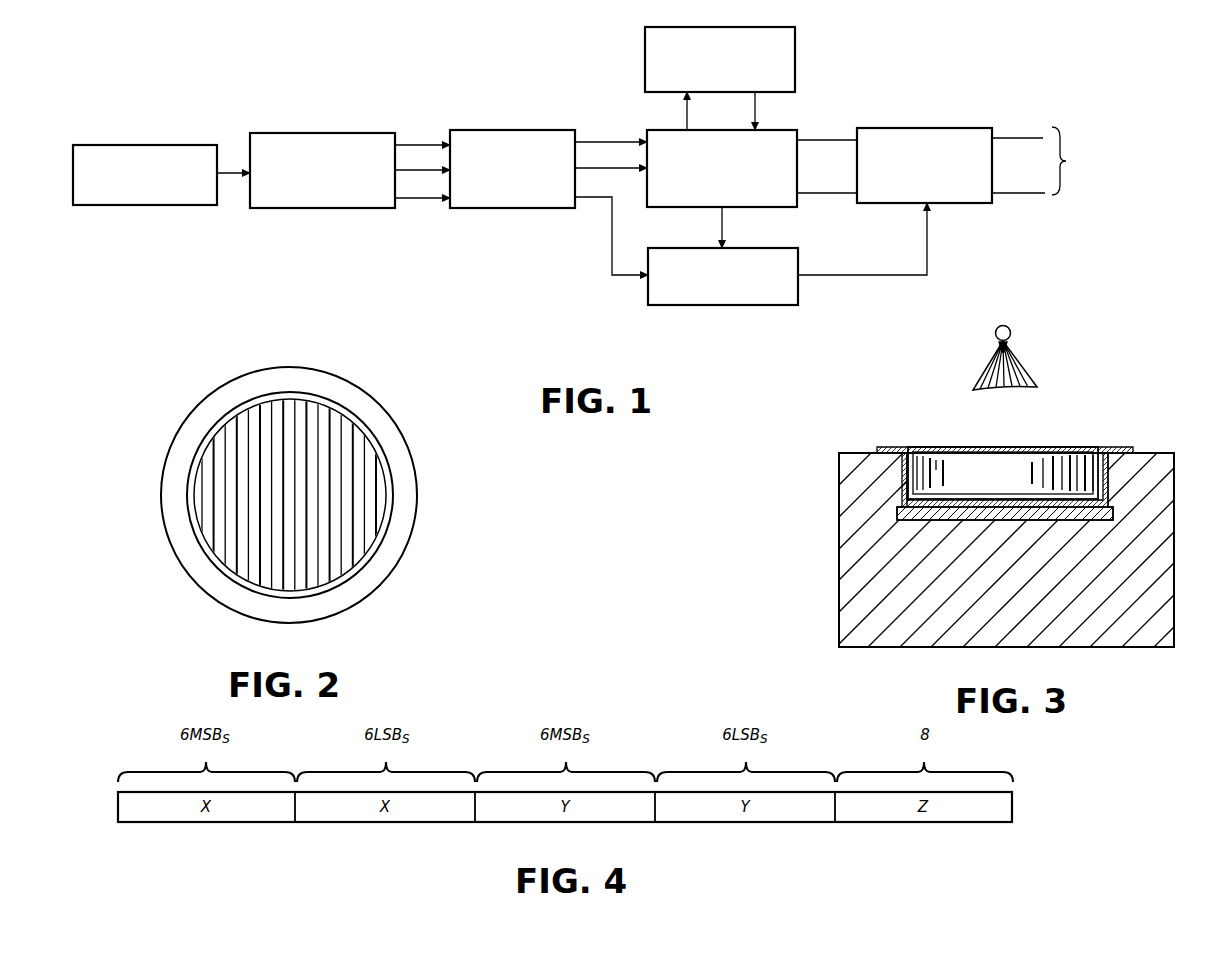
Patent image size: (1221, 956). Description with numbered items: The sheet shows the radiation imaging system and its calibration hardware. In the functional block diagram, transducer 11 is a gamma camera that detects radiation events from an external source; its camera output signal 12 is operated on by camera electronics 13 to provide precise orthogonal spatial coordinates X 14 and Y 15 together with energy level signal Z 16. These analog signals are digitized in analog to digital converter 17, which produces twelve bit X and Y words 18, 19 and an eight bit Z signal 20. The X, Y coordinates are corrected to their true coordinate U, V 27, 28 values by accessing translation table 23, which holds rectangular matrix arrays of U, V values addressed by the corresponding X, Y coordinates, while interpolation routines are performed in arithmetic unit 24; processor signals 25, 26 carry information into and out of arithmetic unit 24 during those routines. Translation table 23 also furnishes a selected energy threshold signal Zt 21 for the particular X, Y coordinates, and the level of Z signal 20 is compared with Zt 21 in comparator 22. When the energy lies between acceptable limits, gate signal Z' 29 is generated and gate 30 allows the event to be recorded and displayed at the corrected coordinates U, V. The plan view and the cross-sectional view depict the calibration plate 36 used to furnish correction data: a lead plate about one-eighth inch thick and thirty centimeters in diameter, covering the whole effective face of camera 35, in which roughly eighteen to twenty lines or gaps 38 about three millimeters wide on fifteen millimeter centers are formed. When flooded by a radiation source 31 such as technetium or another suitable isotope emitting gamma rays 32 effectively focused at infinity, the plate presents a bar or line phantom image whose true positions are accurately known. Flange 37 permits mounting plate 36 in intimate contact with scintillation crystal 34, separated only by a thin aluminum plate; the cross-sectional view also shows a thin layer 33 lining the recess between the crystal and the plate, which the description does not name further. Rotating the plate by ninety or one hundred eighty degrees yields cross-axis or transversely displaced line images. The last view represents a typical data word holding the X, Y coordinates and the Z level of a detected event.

In FIG. 1, the transducer 11 is at (110, 145).
In FIG. 1, the camera output signal 12 is at (245, 176).
In FIG. 1, the camera electronics 13 is at (300, 133).
In FIG. 1, the spatial coordinate X 14 is at (427, 142).
In FIG. 1, the spatial coordinate Y 15 is at (425, 173).
In FIG. 1, the energy level signal Z 16 is at (410, 200).
In FIG. 1, the analog to digital converter 17 is at (518, 130).
In FIG. 1, the X word 18 is at (610, 142).
In FIG. 1, the Y word 19 is at (615, 168).
In FIG. 1, the Z signal 20 is at (597, 200).
In FIG. 1, the energy threshold signal Zt 21 is at (718, 212).
In FIG. 1, the comparator 22 is at (675, 307).
In FIG. 1, the translation table 23 is at (787, 128).
In FIG. 1, the arithmetic unit 24 is at (798, 50).
In FIG. 1, the processor signal 25 is at (690, 116).
In FIG. 1, the processor signal 26 is at (758, 100).
In FIG. 1, the true coordinate U 27 is at (838, 140).
In FIG. 1, the true coordinate V 28 is at (843, 195).
In FIG. 1, the gate signal Z' 29 is at (860, 277).
In FIG. 1, the gate 30 is at (937, 128).
In FIG. 3, the radiation source 31 is at (1010, 328).
In FIG. 3, the gamma rays 32 is at (1050, 447).
In FIG. 3, the liner 33 is at (1112, 505).
In FIG. 3, the scintillation crystal 34 is at (892, 514).
In FIG. 3, the camera 35 is at (838, 593).
In FIG. 2, the calibration plate 36 is at (388, 428).
In FIG. 3, the calibration plate 36 is at (1112, 447).
In FIG. 2, the flange 37 is at (387, 543).
In FIG. 2, the lines or gaps 38 is at (255, 430).